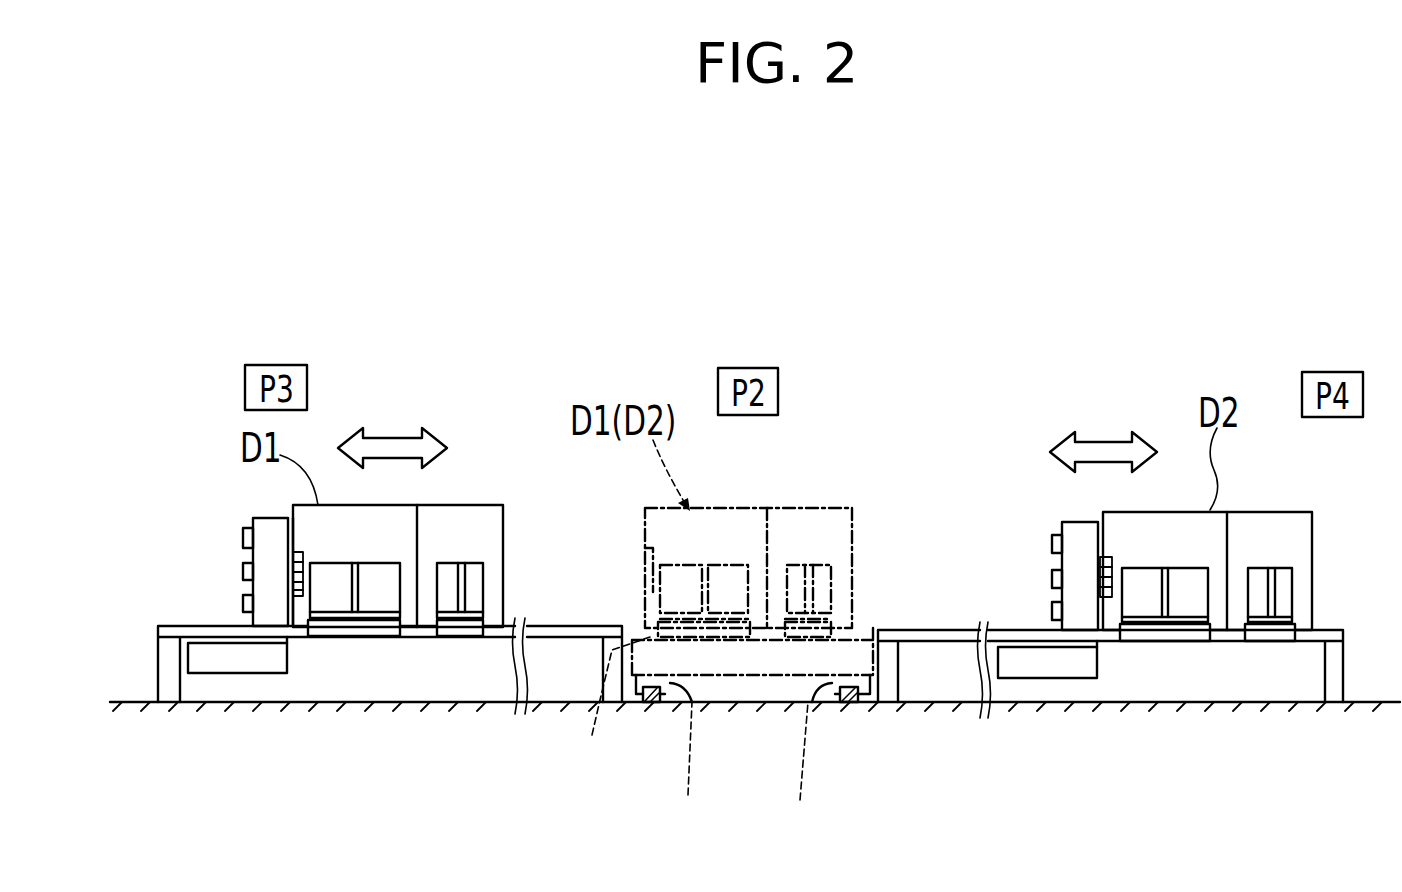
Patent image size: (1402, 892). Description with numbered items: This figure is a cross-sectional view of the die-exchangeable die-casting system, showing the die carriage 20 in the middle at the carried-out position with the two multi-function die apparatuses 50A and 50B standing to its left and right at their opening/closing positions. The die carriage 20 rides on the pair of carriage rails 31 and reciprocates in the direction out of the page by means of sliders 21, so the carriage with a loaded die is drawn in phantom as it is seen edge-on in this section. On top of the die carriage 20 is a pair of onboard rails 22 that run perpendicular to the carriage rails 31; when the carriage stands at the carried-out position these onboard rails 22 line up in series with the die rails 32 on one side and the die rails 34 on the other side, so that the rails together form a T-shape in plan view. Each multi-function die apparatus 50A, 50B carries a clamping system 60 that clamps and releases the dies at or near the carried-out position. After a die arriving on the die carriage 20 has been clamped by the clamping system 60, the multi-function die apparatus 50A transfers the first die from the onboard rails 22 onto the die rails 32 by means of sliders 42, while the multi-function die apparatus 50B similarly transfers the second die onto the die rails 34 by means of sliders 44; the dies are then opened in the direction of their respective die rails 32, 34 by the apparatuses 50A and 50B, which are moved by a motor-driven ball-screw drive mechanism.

The die carriage 20 is at (745, 679).
The sliders 21 is at (748, 773).
The onboard rails 22 is at (612, 709).
The carriage rails 31 is at (655, 702).
The die rails 32 is at (216, 626).
The die rails 34 is at (1030, 630).
The sliders 42 is at (358, 628).
The sliders 44 is at (1162, 641).
The multi-function die apparatus 50A is at (238, 673).
The multi-function die apparatus 50B is at (1050, 678).
The clamping system 60 is at (277, 543).